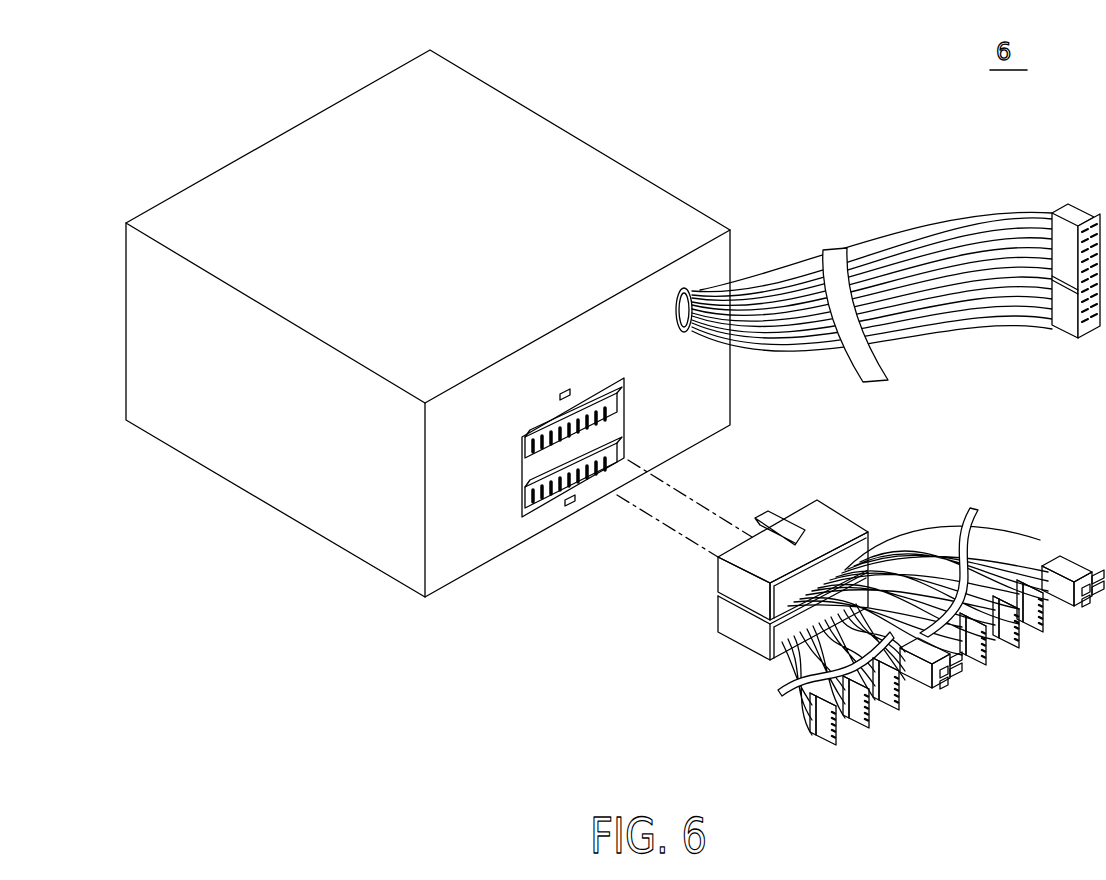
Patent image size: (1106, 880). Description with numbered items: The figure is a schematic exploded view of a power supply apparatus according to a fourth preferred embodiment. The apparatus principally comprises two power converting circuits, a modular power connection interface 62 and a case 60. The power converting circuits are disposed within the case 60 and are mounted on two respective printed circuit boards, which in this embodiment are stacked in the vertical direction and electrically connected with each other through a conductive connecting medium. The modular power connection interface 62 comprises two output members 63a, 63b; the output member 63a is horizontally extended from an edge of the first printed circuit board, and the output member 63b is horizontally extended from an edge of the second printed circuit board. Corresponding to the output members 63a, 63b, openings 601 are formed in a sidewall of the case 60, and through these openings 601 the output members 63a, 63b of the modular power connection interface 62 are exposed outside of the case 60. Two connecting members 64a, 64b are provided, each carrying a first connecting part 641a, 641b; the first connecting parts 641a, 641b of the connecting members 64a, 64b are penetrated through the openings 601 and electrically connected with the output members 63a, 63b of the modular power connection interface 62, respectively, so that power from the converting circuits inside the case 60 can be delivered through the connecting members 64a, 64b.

The case 60 is at (488, 128).
The openings 601 is at (617, 384).
The modular power connection interface 62 is at (566, 542).
The output member 63a is at (520, 458).
The output member 63b is at (573, 520).
The connecting member 64a is at (708, 567).
The connecting member 64b is at (708, 602).
The first connecting part 641a is at (825, 523).
The first connecting part 641b is at (751, 630).